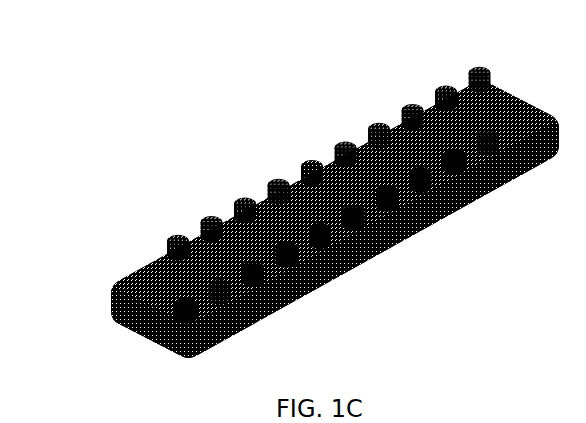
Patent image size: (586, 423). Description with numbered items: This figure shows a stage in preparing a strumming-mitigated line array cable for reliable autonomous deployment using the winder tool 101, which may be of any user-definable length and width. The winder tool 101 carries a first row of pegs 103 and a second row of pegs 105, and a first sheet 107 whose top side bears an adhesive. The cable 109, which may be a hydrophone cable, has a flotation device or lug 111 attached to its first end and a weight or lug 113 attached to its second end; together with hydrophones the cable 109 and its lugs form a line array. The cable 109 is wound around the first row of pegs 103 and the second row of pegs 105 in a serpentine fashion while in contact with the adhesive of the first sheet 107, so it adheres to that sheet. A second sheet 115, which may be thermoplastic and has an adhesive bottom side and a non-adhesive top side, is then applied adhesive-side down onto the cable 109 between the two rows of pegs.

The winder tool 101 is at (302, 235).
The first row of pegs 103 is at (155, 243).
The second row of pegs 105 is at (232, 280).
The first sheet 107 is at (170, 300).
The cable 109 is at (143, 270).
The flotation device or lug 111 is at (230, 325).
The weight or lug 113 is at (452, 75).
The second sheet 115 is at (165, 288).